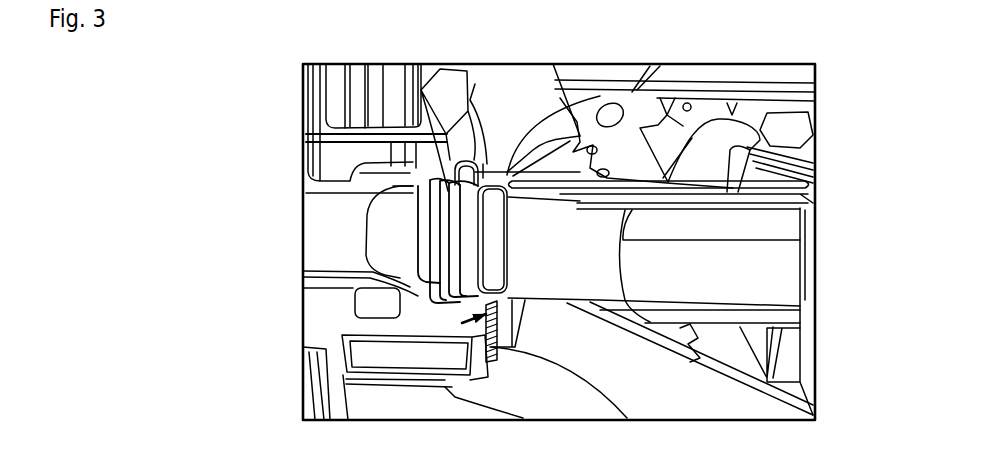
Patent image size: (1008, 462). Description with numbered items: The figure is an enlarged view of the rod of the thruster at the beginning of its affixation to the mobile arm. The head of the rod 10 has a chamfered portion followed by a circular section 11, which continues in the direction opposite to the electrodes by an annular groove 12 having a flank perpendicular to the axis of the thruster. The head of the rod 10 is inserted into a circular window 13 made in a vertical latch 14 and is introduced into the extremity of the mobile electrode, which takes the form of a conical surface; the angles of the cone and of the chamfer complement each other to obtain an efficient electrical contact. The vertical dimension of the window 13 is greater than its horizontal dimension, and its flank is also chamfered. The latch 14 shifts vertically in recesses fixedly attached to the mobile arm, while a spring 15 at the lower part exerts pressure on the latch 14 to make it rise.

The head of the rod 10 is at (575, 263).
The circular section 11 is at (458, 244).
The annular groove 12 is at (489, 266).
The circular window 13 is at (429, 221).
The vertical latch 14 is at (465, 177).
The spring 15 is at (492, 352).